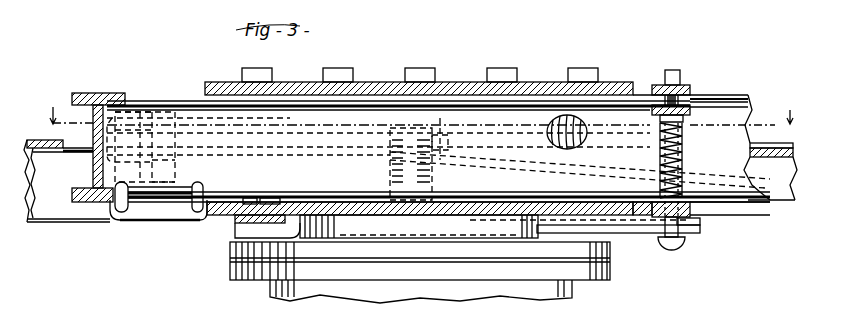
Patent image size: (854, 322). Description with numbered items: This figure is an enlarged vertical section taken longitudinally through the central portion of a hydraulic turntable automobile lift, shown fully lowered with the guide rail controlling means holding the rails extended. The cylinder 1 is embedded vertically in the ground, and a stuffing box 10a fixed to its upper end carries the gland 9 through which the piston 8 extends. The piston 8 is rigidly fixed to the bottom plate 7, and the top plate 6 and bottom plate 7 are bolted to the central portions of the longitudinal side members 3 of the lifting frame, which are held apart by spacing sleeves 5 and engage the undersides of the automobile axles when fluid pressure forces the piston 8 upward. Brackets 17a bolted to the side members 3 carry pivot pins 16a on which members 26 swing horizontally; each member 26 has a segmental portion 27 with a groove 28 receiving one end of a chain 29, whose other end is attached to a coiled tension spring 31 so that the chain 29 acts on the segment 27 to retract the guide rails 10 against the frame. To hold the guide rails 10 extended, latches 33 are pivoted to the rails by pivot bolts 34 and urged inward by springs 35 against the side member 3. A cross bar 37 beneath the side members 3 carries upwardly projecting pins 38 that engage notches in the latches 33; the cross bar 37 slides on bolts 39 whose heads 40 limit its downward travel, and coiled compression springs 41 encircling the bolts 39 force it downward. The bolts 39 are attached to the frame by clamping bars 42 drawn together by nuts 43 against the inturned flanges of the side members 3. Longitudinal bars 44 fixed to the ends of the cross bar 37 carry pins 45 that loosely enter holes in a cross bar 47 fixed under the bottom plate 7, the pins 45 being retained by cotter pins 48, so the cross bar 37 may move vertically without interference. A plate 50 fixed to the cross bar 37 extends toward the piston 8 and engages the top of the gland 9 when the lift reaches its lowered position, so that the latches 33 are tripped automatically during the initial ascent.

The cylinder 1 is at (270, 297).
The side members 3 is at (713, 112).
The spacing sleeves 5 is at (419, 121).
The top plate 6 is at (377, 88).
The bottom plate 7 is at (221, 203).
The piston 8 is at (494, 200).
The gland 9 is at (343, 227).
The guide rails 10 is at (70, 212).
The stuffing box 10a is at (612, 272).
The pivot pins 16a is at (180, 178).
The brackets 17a is at (147, 214).
The members 26 is at (140, 112).
The segmental portion 27 is at (111, 97).
The groove 28 is at (144, 147).
The chain 29 is at (292, 128).
The coiled tension springs 31 is at (547, 127).
The latches 33 is at (575, 168).
The pivot bolts 34 is at (441, 133).
The springs 35 is at (388, 171).
The cross bar 37 is at (718, 212).
The pins 38 is at (683, 178).
The bolts 39 is at (660, 168).
The heads 40 is at (676, 245).
The coiled compression springs 41 is at (683, 136).
The clamping bars 42 is at (653, 100).
The nuts 43 is at (693, 106).
The longitudinal bars 44 is at (234, 235).
The pins 45 is at (264, 203).
The cross bar 47 is at (235, 218).
The cotter pins 48 is at (244, 200).
The plate 50 is at (617, 228).